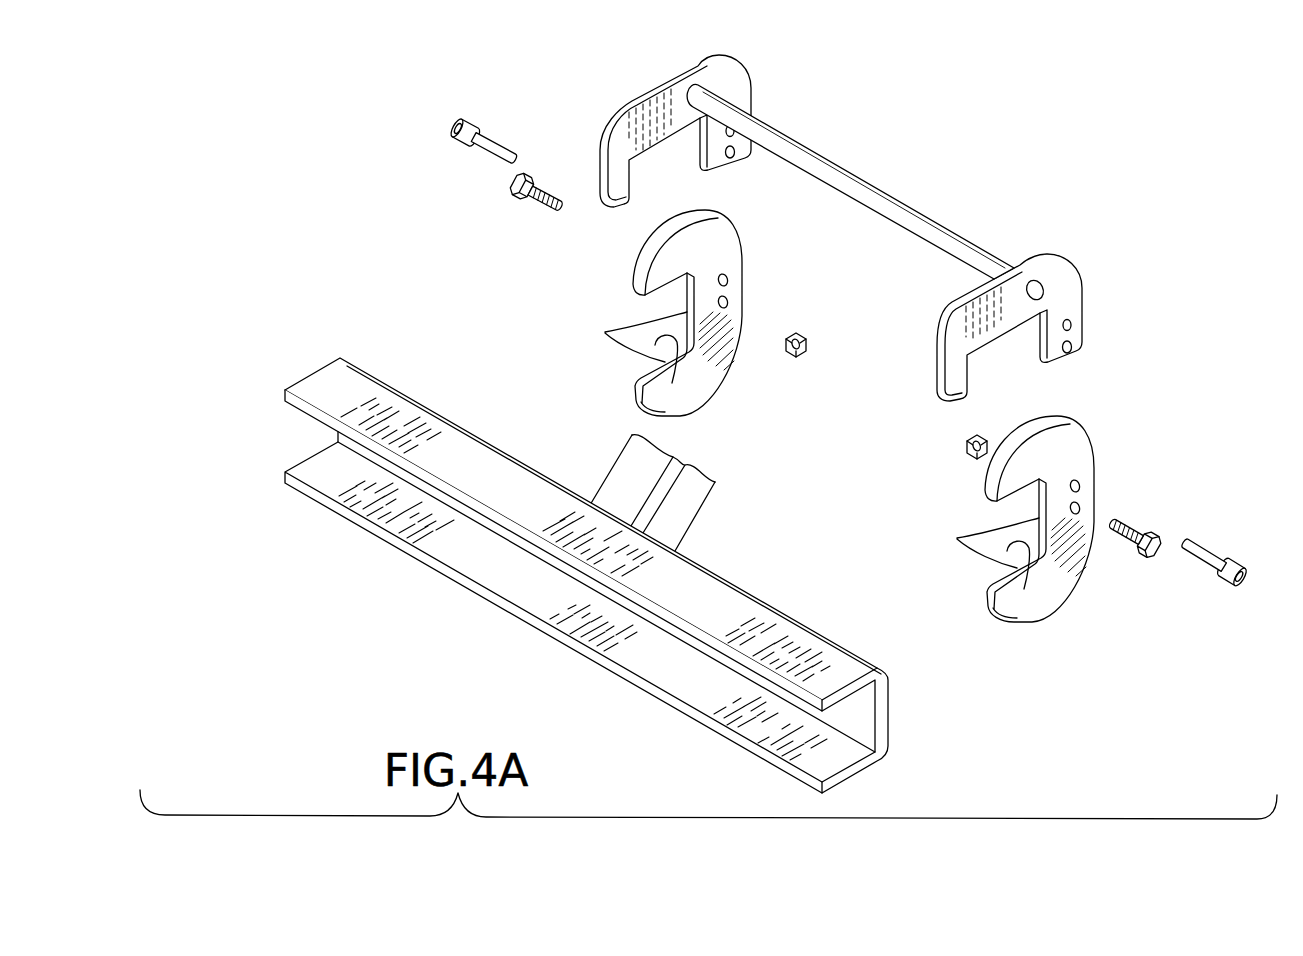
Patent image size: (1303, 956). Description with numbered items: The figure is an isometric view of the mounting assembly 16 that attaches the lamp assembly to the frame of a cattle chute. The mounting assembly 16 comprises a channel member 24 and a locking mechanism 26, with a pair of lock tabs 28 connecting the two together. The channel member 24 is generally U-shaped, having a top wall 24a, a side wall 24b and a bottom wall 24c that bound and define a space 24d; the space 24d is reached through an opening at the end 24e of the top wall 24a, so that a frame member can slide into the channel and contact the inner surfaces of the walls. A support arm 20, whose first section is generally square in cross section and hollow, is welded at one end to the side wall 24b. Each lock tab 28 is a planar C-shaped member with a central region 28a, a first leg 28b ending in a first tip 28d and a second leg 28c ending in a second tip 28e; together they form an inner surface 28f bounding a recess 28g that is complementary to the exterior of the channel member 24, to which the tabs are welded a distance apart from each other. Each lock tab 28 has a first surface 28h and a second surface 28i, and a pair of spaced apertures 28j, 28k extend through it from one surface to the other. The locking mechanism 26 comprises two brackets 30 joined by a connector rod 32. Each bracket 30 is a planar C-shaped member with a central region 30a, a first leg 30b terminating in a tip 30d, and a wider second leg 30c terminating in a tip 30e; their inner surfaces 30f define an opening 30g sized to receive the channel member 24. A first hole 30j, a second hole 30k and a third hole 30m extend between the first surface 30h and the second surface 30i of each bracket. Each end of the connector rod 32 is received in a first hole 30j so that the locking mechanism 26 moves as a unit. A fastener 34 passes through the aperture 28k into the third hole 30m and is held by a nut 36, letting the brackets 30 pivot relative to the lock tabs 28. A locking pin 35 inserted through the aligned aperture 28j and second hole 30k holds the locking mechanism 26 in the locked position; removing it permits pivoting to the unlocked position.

The mounting assembly 16 is at (492, 627).
The support arm 20 is at (699, 509).
The channel member 24 is at (596, 572).
The top wall 24a is at (322, 392).
The side wall 24b is at (889, 707).
The bottom wall 24c is at (323, 468).
The space 24d is at (449, 538).
The end of top wall 24e is at (297, 402).
The locking mechanism 26 is at (860, 348).
The lock tab 28 is at (861, 433).
The central region 28a is at (739, 314).
The first leg 28b is at (677, 257).
The second leg 28c is at (689, 417).
The first tip 28d is at (644, 292).
The second tip 28e is at (640, 382).
The inner surface 28f is at (606, 332).
The recess 28g is at (650, 407).
The first surface 28h is at (695, 388).
The second surface 28i is at (650, 240).
The aperture 28j is at (728, 280).
The aperture 28k is at (728, 302).
The bracket 30 is at (860, 243).
The central region 30a is at (657, 86).
The first leg 30b is at (607, 184).
The second leg 30c is at (727, 167).
The tip 30d is at (619, 210).
The tip 30e is at (748, 166).
The inner surfaces 30f is at (657, 177).
The opening 30g is at (688, 160).
The first surface 30h is at (727, 82).
The second surface 30i is at (616, 103).
The first hole 30j is at (1044, 289).
The second hole 30k is at (735, 130).
The third hole 30m is at (736, 152).
The connector rod 32 is at (897, 210).
The fastener 34 is at (540, 203).
The locking pin 35 is at (490, 153).
The nut 36 is at (808, 346).